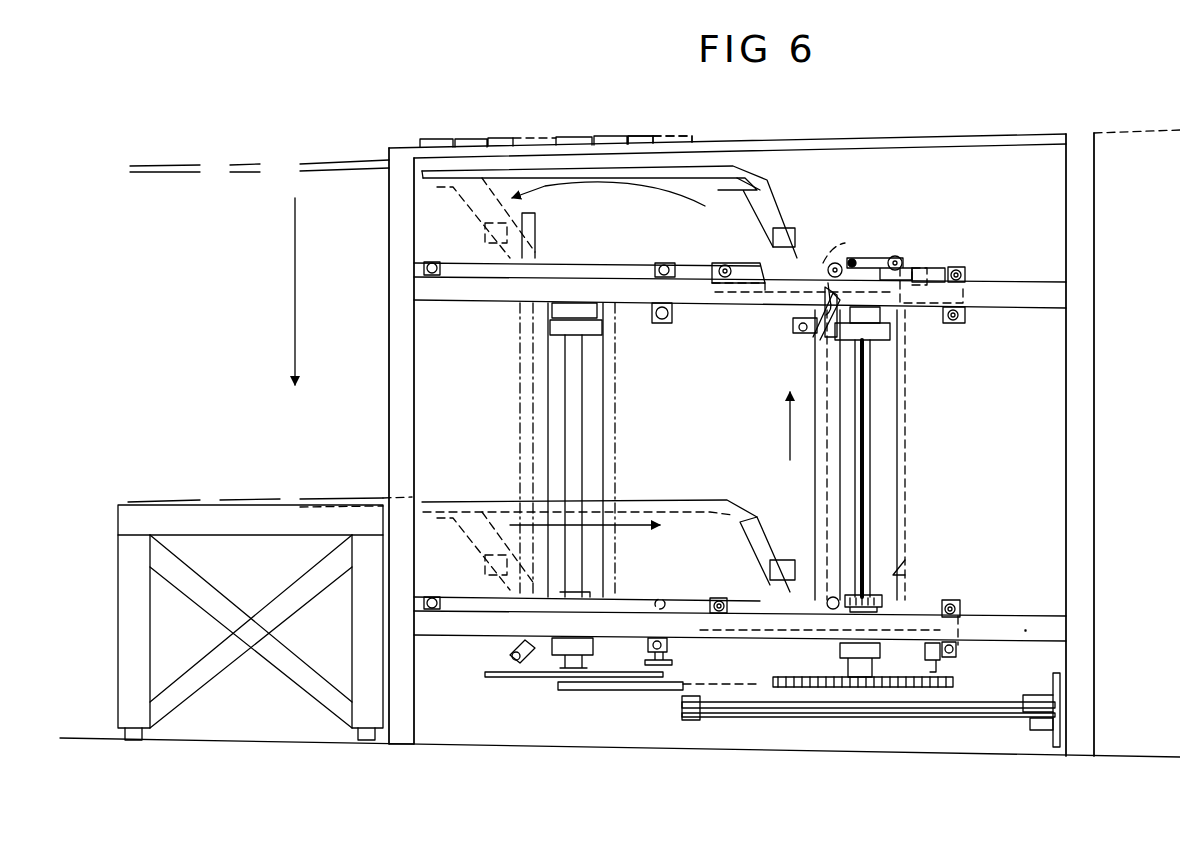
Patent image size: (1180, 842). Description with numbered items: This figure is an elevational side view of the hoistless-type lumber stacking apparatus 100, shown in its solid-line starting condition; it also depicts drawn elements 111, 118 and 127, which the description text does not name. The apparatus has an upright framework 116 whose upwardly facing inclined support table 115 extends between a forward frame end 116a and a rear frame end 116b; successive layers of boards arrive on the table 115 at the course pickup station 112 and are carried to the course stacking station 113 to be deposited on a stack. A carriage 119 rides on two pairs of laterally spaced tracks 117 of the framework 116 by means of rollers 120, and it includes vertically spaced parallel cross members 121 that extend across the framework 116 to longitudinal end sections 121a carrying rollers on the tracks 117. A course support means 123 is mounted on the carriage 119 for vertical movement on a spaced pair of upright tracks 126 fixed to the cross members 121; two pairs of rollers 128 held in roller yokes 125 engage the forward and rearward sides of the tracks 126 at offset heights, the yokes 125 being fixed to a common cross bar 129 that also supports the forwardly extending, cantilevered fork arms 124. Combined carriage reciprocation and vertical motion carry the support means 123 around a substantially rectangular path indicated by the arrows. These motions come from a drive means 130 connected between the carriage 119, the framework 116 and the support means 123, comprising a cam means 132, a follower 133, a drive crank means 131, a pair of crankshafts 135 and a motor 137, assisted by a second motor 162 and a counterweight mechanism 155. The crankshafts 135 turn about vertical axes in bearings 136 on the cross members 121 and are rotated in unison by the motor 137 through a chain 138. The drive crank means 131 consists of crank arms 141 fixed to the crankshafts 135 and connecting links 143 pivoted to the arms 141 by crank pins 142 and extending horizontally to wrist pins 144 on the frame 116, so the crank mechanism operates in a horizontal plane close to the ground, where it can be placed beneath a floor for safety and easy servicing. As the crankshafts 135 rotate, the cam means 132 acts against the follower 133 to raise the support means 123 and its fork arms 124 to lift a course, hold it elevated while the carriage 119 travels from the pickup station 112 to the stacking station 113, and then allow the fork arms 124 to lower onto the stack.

The hoistless-type lumber stacking apparatus 100 is at (1098, 201).
The upper conveyor 111 is at (566, 140).
The course pickup station 112 is at (499, 138).
The course stacking station 113 is at (252, 500).
The inclined support table 115 is at (634, 141).
The upright framework 116 is at (436, 635).
The forward frame end 116a is at (410, 363).
The rear frame end 116b is at (1096, 424).
The tracks 117 is at (705, 303).
The upper horizontal rail 118 is at (410, 270).
The carriage 119 is at (965, 318).
The rollers 120 is at (726, 264).
The cross members 121 is at (870, 626).
The longitudinal end sections 121a is at (937, 270).
The course support means 123 is at (782, 184).
The fork arms 124 is at (667, 174).
The roller yokes 125 is at (800, 320).
The upright tracks 126 is at (823, 383).
The link 127 is at (835, 330).
The rollers 128 is at (830, 250).
The common cross bar 129 is at (771, 237).
The drive means 130 is at (860, 714).
The drive crank means 131 is at (968, 702).
The cam means 132 is at (884, 333).
The follower 133 is at (840, 303).
The crankshafts 135 is at (863, 438).
The bearings 136 is at (887, 258).
The motor 137 is at (958, 652).
The chain 138 is at (898, 682).
The crank arms 141 is at (745, 688).
The crank pins 142 is at (690, 672).
The connecting links 143 is at (775, 708).
The wrist pins 144 is at (1030, 722).
The counterweight mechanism 155 is at (903, 580).
The second motor 162 is at (935, 296).